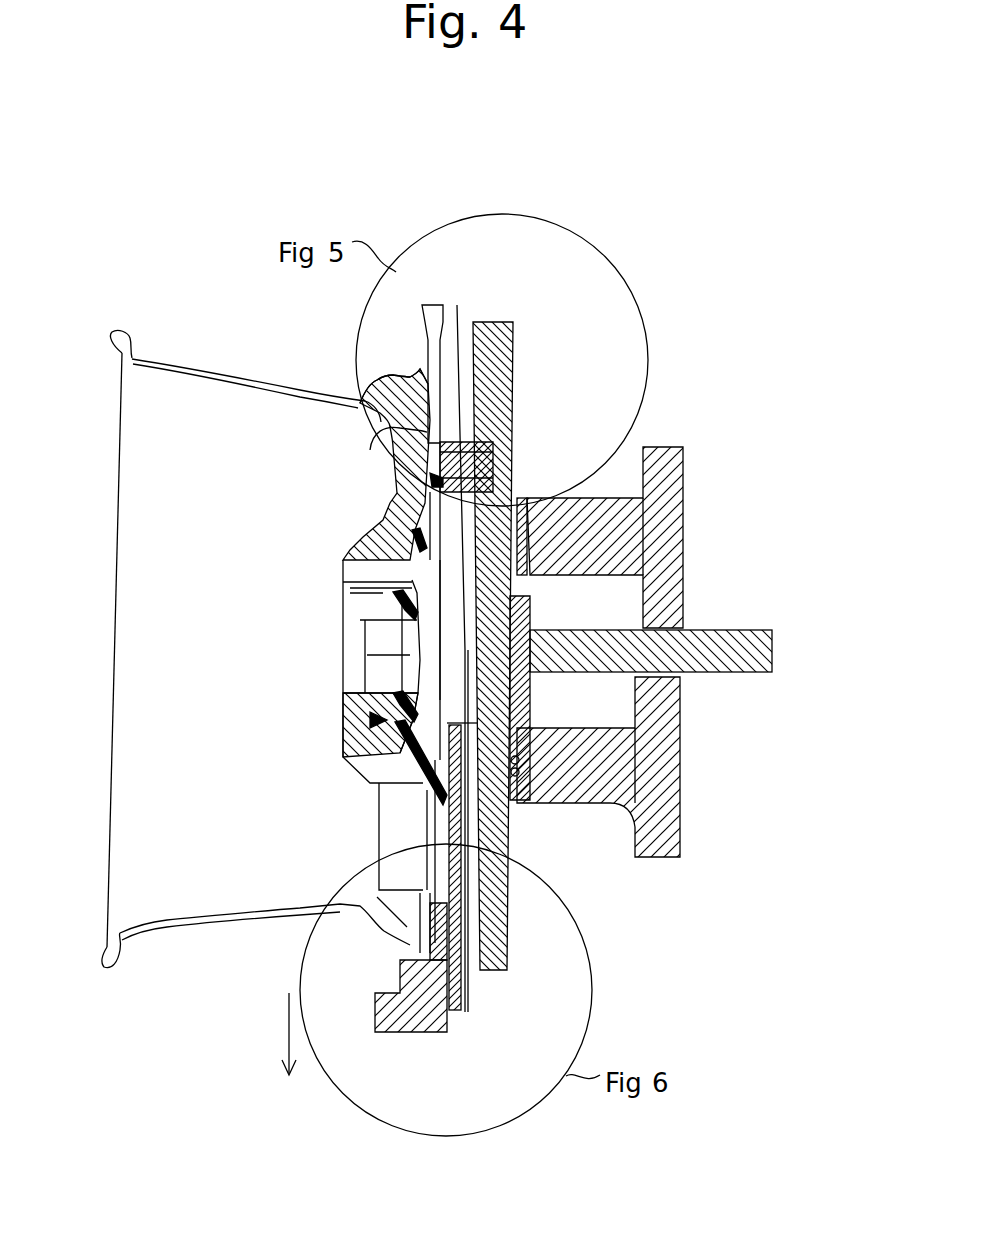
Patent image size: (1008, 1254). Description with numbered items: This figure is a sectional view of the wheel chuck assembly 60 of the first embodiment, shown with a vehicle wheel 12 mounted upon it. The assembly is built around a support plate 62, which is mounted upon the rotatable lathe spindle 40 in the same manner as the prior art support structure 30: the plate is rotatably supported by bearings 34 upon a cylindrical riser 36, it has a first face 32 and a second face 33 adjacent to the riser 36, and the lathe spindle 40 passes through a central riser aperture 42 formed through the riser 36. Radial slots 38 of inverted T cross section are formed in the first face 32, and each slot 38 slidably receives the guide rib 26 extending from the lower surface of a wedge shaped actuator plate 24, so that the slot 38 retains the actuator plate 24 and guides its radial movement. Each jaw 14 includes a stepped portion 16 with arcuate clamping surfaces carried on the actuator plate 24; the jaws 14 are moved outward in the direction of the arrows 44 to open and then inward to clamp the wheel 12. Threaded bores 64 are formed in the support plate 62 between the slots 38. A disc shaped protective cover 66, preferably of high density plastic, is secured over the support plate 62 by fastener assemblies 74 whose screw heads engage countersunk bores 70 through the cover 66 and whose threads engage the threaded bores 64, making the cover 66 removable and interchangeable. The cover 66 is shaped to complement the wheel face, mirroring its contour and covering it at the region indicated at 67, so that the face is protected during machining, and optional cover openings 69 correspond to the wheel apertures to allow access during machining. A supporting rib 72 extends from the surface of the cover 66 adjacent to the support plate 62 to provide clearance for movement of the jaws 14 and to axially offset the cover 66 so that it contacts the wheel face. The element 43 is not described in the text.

The vehicle wheel 12 is at (120, 545).
The jaw 14 is at (414, 1046).
The stepped portion 16 is at (373, 1022).
The actuator plate 24 is at (455, 1010).
The guide rib 26 is at (450, 730).
The support structure 30 is at (574, 402).
The first face 32 is at (467, 653).
The second face 33 is at (507, 920).
The bearings 34 is at (522, 500).
The cylindrical riser 36 is at (596, 492).
The radial slot 38 is at (513, 712).
The lathe spindle 40 is at (733, 615).
The central riser aperture 42 is at (685, 672).
The housing flange 43 is at (692, 578).
The arrows 44 is at (268, 1034).
The wheel chuck assembly 60 is at (540, 984).
The support plate 62 is at (485, 322).
The threaded bore 64 is at (450, 355).
The protective cover 66 is at (432, 305).
The mirrored portion of the wheel face 67 is at (352, 737).
The cover opening 69 is at (345, 582).
The countersunk bore 70 is at (385, 428).
The supporting rib 72 is at (395, 750).
The fastener assembly 74 is at (372, 513).